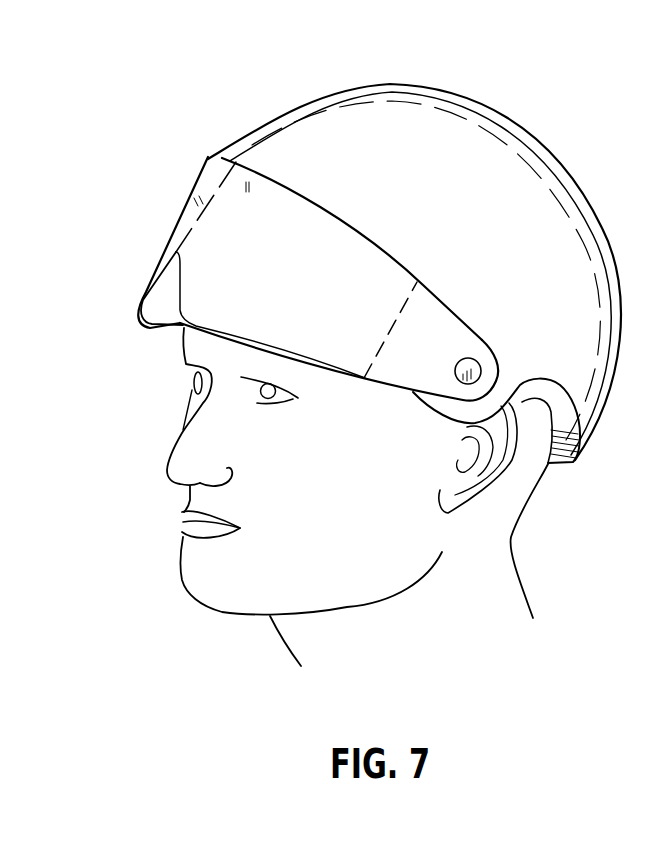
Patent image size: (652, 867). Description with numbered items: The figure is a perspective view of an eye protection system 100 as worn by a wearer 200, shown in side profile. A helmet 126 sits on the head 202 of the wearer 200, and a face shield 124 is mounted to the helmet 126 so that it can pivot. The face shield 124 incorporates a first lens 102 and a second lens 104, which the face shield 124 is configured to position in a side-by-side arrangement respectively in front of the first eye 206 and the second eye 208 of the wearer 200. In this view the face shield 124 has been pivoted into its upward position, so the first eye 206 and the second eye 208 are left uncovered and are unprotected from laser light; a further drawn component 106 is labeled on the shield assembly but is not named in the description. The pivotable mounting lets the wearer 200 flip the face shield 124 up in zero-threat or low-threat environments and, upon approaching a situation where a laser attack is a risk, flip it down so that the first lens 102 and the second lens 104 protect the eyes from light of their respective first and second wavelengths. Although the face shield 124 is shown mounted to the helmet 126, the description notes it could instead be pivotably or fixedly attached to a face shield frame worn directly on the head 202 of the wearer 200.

The eye protection system 100 is at (206, 154).
The first lens 102 is at (248, 187).
The second lens 104 is at (192, 201).
The lower visor portion 106 is at (430, 289).
The face shield 124 is at (370, 232).
The helmet 126 is at (518, 121).
The wearer 200 is at (178, 584).
The head 202 is at (542, 470).
The first eye 206 is at (278, 407).
The second eye 208 is at (188, 375).